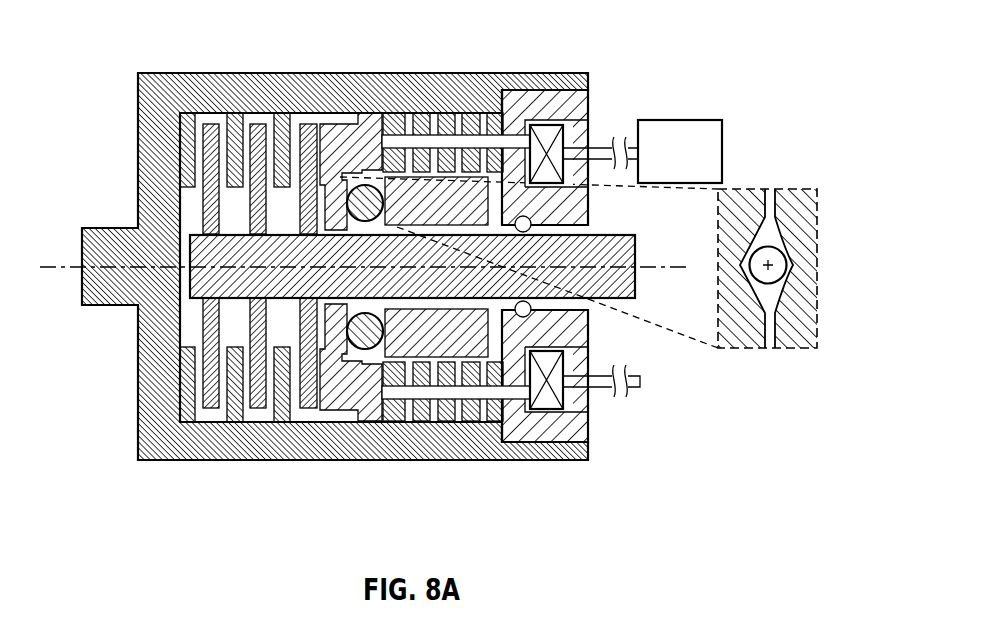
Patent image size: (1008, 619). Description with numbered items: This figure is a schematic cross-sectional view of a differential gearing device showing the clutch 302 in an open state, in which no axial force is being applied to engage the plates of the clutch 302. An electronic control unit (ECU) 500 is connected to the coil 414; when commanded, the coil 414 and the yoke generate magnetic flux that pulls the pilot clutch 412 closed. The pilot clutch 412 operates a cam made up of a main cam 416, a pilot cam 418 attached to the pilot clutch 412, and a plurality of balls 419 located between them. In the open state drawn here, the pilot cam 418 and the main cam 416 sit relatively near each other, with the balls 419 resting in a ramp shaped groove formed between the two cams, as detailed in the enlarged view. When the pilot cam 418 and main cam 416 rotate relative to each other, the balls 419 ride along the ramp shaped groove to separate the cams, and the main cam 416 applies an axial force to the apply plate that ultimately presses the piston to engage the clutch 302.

The clutch 302 is at (267, 120).
The pilot clutch 412 is at (427, 128).
The coil 414 is at (560, 393).
The main cam 416 is at (334, 372).
The pilot cam 418 is at (458, 335).
The balls 419 is at (375, 200).
The electronic control unit (ECU) 500 is at (680, 120).